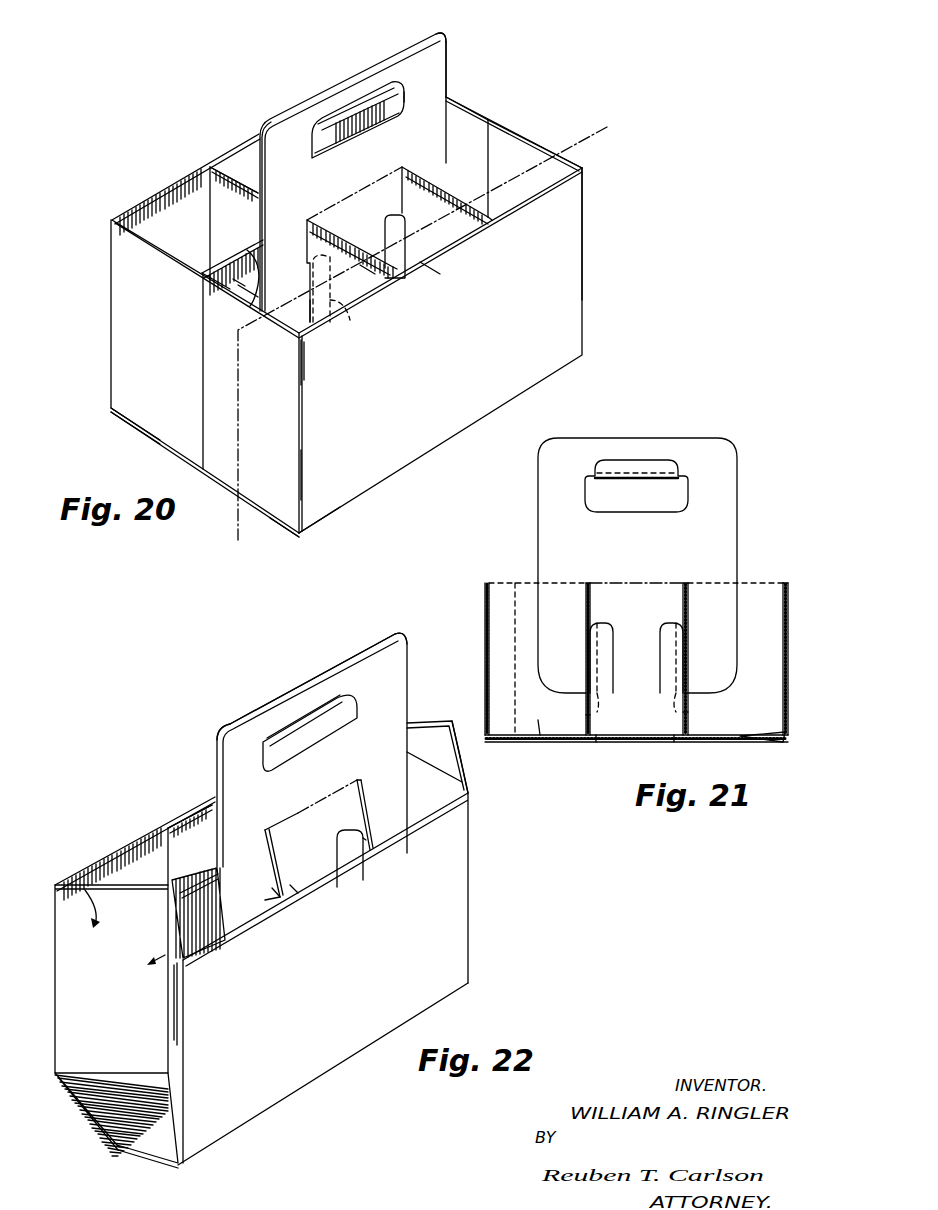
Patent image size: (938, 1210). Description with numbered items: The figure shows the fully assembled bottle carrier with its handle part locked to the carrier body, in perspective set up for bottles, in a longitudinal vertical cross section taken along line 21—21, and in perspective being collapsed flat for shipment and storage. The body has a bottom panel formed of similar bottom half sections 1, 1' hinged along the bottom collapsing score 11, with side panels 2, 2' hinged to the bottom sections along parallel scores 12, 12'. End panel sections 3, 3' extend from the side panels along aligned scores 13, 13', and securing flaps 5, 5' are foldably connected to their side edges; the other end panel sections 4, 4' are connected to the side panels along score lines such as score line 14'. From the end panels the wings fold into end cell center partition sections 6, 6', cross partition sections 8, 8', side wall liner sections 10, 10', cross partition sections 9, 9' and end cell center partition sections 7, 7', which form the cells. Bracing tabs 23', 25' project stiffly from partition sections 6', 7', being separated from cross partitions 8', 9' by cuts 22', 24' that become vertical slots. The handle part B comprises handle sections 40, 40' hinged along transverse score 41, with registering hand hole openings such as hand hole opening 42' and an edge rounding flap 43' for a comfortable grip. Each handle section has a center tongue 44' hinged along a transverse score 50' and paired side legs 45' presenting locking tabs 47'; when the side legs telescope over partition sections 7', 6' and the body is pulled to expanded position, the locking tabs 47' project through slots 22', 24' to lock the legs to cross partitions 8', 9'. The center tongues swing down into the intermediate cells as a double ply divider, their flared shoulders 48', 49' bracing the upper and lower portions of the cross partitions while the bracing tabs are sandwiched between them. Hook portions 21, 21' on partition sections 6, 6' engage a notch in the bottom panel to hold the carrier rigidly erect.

In FIG. 20, the bottom half section 1 is at (128, 428).
In FIG. 22, the bottom half section 1 is at (111, 1120).
In FIG. 20, the bottom half section 1' is at (297, 535).
In FIG. 21, the bottom half section 1' is at (636, 753).
In FIG. 22, the bottom half section 1' is at (291, 1087).
In FIG. 20, the side panel 2 is at (186, 184).
In FIG. 22, the side panel 2 is at (135, 848).
In FIG. 20, the side panel 2' is at (440, 350).
In FIG. 22, the side panel 2' is at (325, 888).
In FIG. 20, the end panel section 3 is at (157, 344).
In FIG. 22, the end panel section 3 is at (111, 979).
In FIG. 20, the end panel section 3' is at (207, 406).
In FIG. 21, the end panel section 3' is at (470, 659).
In FIG. 22, the end panel section 3' is at (159, 1061).
In FIG. 20, the end panel section 4 is at (514, 127).
In FIG. 22, the end panel section 4 is at (437, 738).
In FIG. 20, the end panel section 4' is at (535, 138).
In FIG. 21, the end panel section 4' is at (798, 659).
In FIG. 22, the end panel section 4' is at (476, 775).
In FIG. 20, the securing flap 5 is at (195, 279).
In FIG. 22, the securing flap 5 is at (129, 891).
In FIG. 20, the securing flap 5' is at (228, 294).
In FIG. 21, the securing flap 5' is at (621, 643).
In FIG. 22, the securing flap 5' is at (166, 929).
In FIG. 20, the end cell center partition section 6 is at (467, 117).
In FIG. 22, the end cell center partition section 6 is at (434, 742).
In FIG. 20, the end cell center partition section 6' is at (505, 157).
In FIG. 21, the end cell center partition section 6' is at (799, 594).
In FIG. 22, the end cell center partition section 6' is at (460, 749).
In FIG. 20, the end cell center partition section 7 is at (238, 266).
In FIG. 22, the end cell center partition section 7 is at (206, 873).
In FIG. 20, the end cell center partition section 7' is at (244, 304).
In FIG. 21, the end cell center partition section 7' is at (531, 752).
In FIG. 20, the cross partition section 8 is at (343, 117).
In FIG. 20, the cross partition section 8' is at (515, 220).
In FIG. 21, the cross partition section 8' is at (705, 709).
In FIG. 22, the cross partition section 8' is at (391, 858).
In FIG. 20, the cross partition section 9 is at (211, 215).
In FIG. 22, the cross partition section 9 is at (182, 831).
In FIG. 20, the cross partition section 9' is at (404, 293).
In FIG. 21, the cross partition section 9' is at (573, 711).
In FIG. 22, the cross partition section 9' is at (289, 921).
In FIG. 20, the side wall liner section 10 is at (234, 157).
In FIG. 22, the side wall liner section 10 is at (190, 802).
In FIG. 20, the side wall liner section 10' is at (463, 272).
In FIG. 22, the side wall liner section 10' is at (310, 903).
In FIG. 22, the bottom collapsing score 11 is at (118, 1146).
In FIG. 20, the score 12 is at (112, 423).
In FIG. 20, the score 12' is at (336, 521).
In FIG. 20, the score 13 is at (322, 253).
In FIG. 20, the score 13' is at (328, 433).
In FIG. 20, the score line 14' is at (609, 226).
In FIG. 20, the hook portion 21 is at (422, 339).
In FIG. 21, the hook portion 21' is at (773, 758).
In FIG. 20, the cut 22' is at (444, 255).
In FIG. 22, the cut 22' is at (394, 839).
In FIG. 21, the bracing tab 23' is at (664, 707).
In FIG. 20, the cut 24' is at (331, 329).
In FIG. 22, the cut 24' is at (254, 896).
In FIG. 21, the bracing tab 25' is at (609, 707).
In FIG. 20, the handle section 40 is at (303, 172).
In FIG. 22, the handle section 40 is at (292, 750).
In FIG. 20, the handle section 40' is at (466, 71).
In FIG. 21, the handle section 40' is at (670, 594).
In FIG. 22, the handle section 40' is at (210, 729).
In FIG. 22, the transverse score 41 is at (245, 716).
In FIG. 20, the hand hole opening 42' is at (444, 78).
In FIG. 21, the hand hole opening 42' is at (689, 486).
In FIG. 22, the hand hole opening 42' is at (327, 726).
In FIG. 20, the edge rounding flap 43' is at (357, 94).
In FIG. 21, the edge rounding flap 43' is at (637, 447).
In FIG. 22, the edge rounding flap 43' is at (304, 697).
In FIG. 20, the center tongue 44' is at (350, 263).
In FIG. 21, the center tongue 44' is at (646, 667).
In FIG. 22, the center tongue 44' is at (325, 870).
In FIG. 20, the side leg 45' is at (345, 255).
In FIG. 21, the side leg 45' is at (651, 638).
In FIG. 22, the side leg 45' is at (299, 869).
In FIG. 20, the locking tab 47' is at (387, 273).
In FIG. 21, the locking tab 47' is at (636, 646).
In FIG. 22, the locking tab 47' is at (357, 876).
In FIG. 20, the flared shoulder 48' is at (357, 184).
In FIG. 21, the flared shoulder 48' is at (647, 566).
In FIG. 21, the laterally flared shoulder 49' is at (647, 759).
In FIG. 21, the transverse score 50' is at (636, 560).
In FIG. 22, the transverse score 50' is at (311, 805).
In FIG. 20, the handle B is at (445, 37).
In FIG. 21, the handle B is at (731, 440).
In FIG. 22, the handle B is at (396, 641).